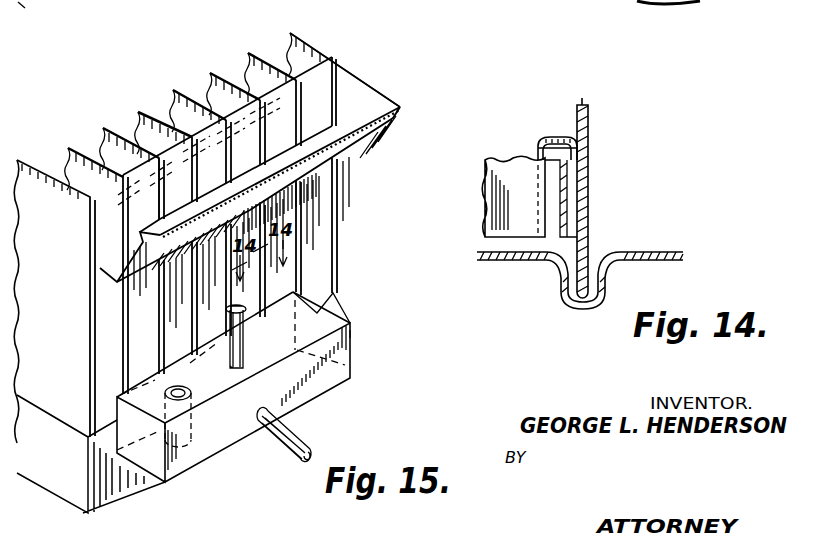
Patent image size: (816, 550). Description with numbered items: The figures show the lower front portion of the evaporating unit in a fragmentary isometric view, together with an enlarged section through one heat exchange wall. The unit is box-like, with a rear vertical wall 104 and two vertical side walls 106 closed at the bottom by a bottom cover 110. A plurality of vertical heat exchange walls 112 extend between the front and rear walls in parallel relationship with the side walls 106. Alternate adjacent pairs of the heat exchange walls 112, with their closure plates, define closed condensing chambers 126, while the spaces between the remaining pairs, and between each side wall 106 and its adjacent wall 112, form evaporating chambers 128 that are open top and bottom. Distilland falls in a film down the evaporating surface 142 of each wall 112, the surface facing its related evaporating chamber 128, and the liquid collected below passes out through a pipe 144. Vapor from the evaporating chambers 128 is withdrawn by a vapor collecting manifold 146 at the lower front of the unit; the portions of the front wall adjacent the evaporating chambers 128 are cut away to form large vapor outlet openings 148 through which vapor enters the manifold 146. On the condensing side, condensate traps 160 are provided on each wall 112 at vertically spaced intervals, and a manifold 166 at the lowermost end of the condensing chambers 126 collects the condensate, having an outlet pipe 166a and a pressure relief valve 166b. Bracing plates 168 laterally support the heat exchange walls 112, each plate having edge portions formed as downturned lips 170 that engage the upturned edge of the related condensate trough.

In FIG. 15, the rear vertical wall 104 is at (318, 228).
In FIG. 14, the rear vertical wall 104 is at (513, 257).
In FIG. 15, the vertical side wall 106 is at (66, 318).
In FIG. 15, the bottom cover 110 is at (100, 496).
In FIG. 15, the heat exchange wall 112 is at (136, 128).
In FIG. 14, the heat exchange wall 112 is at (589, 118).
In FIG. 15, the condensing chamber 126 is at (230, 110).
In FIG. 15, the evaporating chamber 128 is at (276, 51).
In FIG. 15, the evaporating surface 142 is at (132, 140).
In FIG. 15, the pipe 144 is at (195, 440).
In FIG. 15, the vapor collecting manifold 146 is at (373, 82).
In FIG. 15, the vapor outlet opening 148 is at (213, 107).
In FIG. 14, the condensate trap 160 is at (542, 136).
In FIG. 15, the manifold 166 is at (350, 343).
In FIG. 15, the outlet pipe 166a is at (303, 436).
In FIG. 15, the pressure relief valve 166b is at (245, 343).
In FIG. 14, the bracing plate 168 is at (500, 165).
In FIG. 15, the downturned lip 170 is at (43, 10).